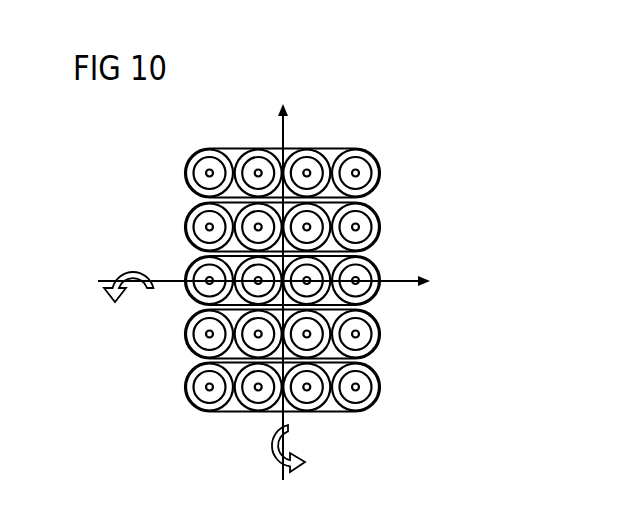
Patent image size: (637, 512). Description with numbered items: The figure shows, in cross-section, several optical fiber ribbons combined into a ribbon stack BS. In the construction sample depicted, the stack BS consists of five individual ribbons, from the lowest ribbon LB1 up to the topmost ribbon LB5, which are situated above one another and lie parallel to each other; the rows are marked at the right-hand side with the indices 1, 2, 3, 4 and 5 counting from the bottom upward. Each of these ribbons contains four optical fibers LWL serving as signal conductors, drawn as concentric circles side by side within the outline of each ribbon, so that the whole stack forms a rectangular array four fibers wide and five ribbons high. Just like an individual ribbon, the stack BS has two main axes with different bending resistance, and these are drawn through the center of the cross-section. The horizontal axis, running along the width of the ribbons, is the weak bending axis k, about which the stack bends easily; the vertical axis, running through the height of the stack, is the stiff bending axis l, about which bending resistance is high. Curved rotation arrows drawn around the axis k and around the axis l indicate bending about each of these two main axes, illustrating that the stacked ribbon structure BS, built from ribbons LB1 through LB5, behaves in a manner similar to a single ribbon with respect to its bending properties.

The ribbon stack BS is at (340, 134).
The individual ribbon LB5 is at (179, 173).
The individual ribbon LB1 is at (179, 390).
The optical fiber LWL is at (203, 400).
The stiff bending axis l is at (288, 292).
The weak bending axis k is at (273, 282).
The ribbon row index 1 is at (272, 409).
The ribbon row index 2 is at (293, 333).
The ribbon row index 3 is at (293, 280).
The ribbon row index 4 is at (293, 227).
The ribbon row index 5 is at (293, 173).